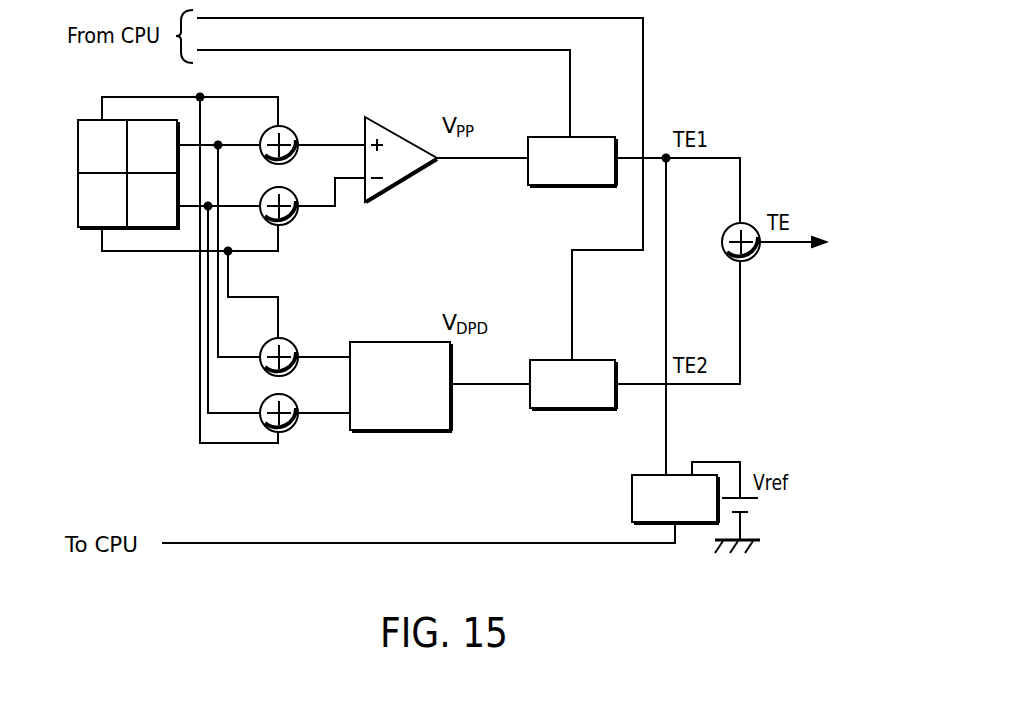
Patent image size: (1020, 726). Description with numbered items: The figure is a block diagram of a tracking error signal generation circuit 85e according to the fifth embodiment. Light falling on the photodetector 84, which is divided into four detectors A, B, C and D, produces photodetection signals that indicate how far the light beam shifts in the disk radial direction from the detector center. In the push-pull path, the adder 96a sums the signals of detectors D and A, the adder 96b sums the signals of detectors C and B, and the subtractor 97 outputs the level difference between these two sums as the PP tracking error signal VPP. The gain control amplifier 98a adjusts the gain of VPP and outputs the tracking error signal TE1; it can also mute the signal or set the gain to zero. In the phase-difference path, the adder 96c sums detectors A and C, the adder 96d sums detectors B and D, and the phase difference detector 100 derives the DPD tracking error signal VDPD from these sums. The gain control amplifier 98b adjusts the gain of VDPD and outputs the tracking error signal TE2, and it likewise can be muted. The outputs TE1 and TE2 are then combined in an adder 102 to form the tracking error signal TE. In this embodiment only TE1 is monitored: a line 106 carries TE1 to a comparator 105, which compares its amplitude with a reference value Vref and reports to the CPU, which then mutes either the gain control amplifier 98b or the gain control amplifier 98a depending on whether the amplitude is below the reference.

The photodetector 84 is at (87, 245).
The tracking error signal generation circuit 85e is at (512, 242).
The adder 96a is at (296, 130).
The adder 96b is at (294, 222).
The adder 96c is at (296, 343).
The adder 96d is at (293, 428).
The subtractor 97 is at (400, 181).
The gain control amplifier 98a is at (604, 135).
The gain control amplifier 98b is at (598, 358).
The phase difference detector 100 is at (418, 433).
The adder 102 is at (757, 258).
The comparator 105 is at (632, 496).
The signal line 106 is at (695, 220).